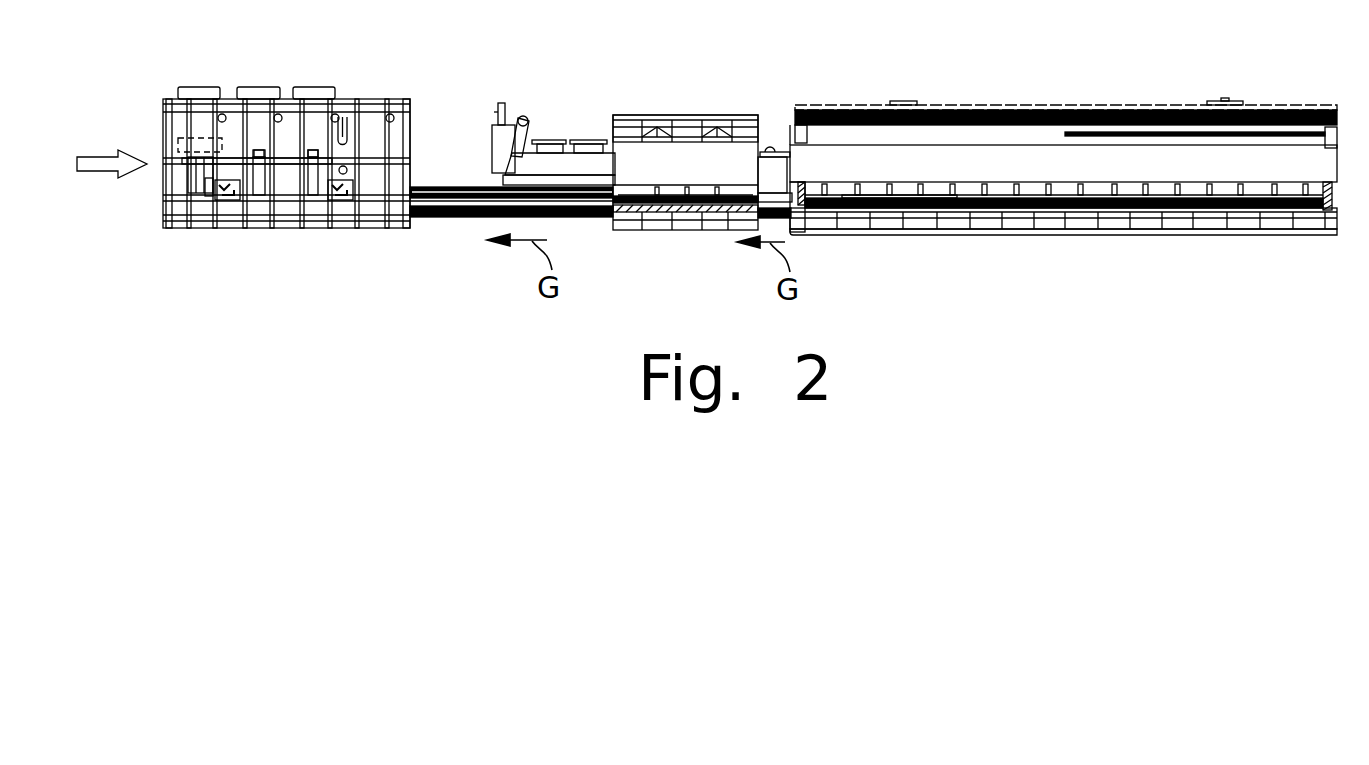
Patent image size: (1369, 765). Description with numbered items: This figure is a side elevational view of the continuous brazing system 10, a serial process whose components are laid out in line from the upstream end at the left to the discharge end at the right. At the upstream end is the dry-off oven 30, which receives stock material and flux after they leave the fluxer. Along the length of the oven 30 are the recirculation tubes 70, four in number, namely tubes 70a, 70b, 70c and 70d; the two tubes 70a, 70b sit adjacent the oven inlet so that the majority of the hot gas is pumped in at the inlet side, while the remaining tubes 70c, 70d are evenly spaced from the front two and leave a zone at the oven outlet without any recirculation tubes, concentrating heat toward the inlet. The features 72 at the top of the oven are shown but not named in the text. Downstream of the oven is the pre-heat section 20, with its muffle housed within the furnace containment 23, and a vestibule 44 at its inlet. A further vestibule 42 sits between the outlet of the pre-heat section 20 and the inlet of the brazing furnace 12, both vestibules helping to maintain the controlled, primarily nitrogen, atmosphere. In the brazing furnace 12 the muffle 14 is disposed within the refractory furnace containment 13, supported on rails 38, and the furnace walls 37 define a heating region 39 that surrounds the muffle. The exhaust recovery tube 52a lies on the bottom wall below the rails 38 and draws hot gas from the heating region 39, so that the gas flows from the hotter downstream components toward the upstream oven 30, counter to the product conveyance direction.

The continuous brazing system 10 is at (635, 82).
The brazing furnace 12 is at (1058, 106).
The furnace containment 13 is at (1145, 110).
The muffle 14 is at (935, 165).
The pre-heat section 20 is at (700, 117).
The furnace containment 23 is at (732, 116).
The dry-off oven 30 is at (373, 100).
The furnace walls 37 is at (1075, 232).
The rails 38 is at (972, 192).
The heating region 39 is at (1155, 192).
The vestibule 42 is at (782, 155).
The vestibule 44 is at (548, 160).
The exhaust recovery tube 52a is at (845, 197).
The recirculation tubes 70 is at (287, 197).
The recirculation tube 70a is at (190, 177).
The recirculation tube 70b is at (213, 190).
The recirculation tube 70c is at (255, 157).
The recirculation tube 70d is at (322, 143).
The caps 72 is at (262, 98).